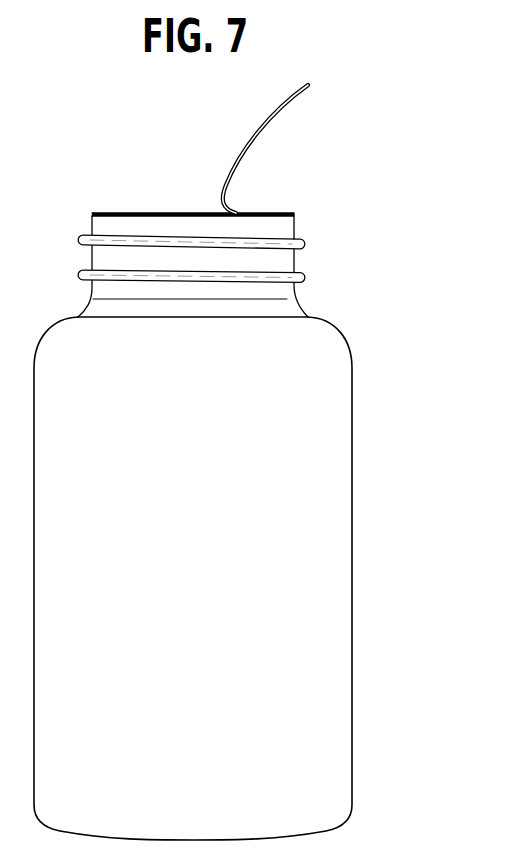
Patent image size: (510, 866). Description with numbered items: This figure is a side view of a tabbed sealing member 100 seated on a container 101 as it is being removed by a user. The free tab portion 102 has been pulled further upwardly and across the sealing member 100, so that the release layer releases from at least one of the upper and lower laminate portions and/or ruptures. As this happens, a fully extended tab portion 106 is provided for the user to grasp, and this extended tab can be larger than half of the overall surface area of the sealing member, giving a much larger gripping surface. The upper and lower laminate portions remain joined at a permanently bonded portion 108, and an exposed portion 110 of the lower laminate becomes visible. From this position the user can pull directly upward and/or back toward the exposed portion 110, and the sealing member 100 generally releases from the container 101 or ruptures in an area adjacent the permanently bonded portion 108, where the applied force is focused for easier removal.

The sealing member 100 is at (140, 128).
The container 101 is at (333, 453).
The free tab portion 102 is at (287, 94).
The fully extended tab portion 106 is at (288, 121).
The permanently bonded portion 108 is at (271, 213).
The exposed portion 110 is at (120, 207).